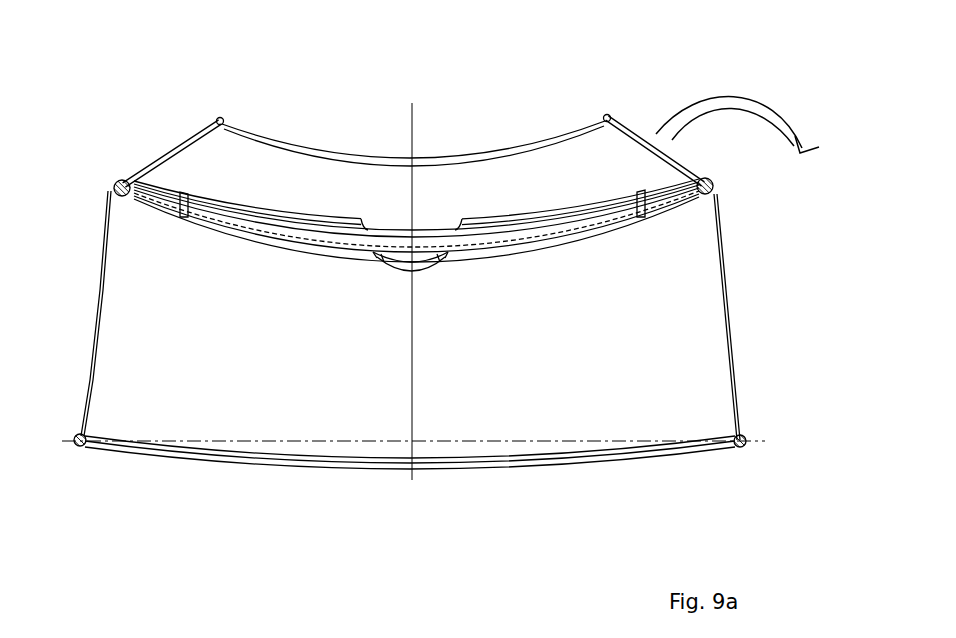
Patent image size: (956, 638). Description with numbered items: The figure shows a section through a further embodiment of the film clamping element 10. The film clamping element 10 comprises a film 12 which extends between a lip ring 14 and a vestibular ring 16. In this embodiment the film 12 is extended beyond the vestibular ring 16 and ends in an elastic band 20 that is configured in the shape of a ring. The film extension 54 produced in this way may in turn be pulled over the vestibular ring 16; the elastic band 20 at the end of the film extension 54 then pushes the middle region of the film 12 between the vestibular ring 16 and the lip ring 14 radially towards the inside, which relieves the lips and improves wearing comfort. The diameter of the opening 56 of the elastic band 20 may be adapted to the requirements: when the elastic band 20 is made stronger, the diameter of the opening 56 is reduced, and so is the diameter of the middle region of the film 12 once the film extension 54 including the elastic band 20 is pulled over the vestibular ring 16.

The film clamping element 10 is at (203, 532).
The film 12 is at (730, 292).
The lip ring 14 is at (524, 468).
The vestibular ring 16 is at (730, 194).
The elastic band 20 is at (611, 114).
The film extension 54 is at (172, 136).
The opening 56 is at (475, 108).